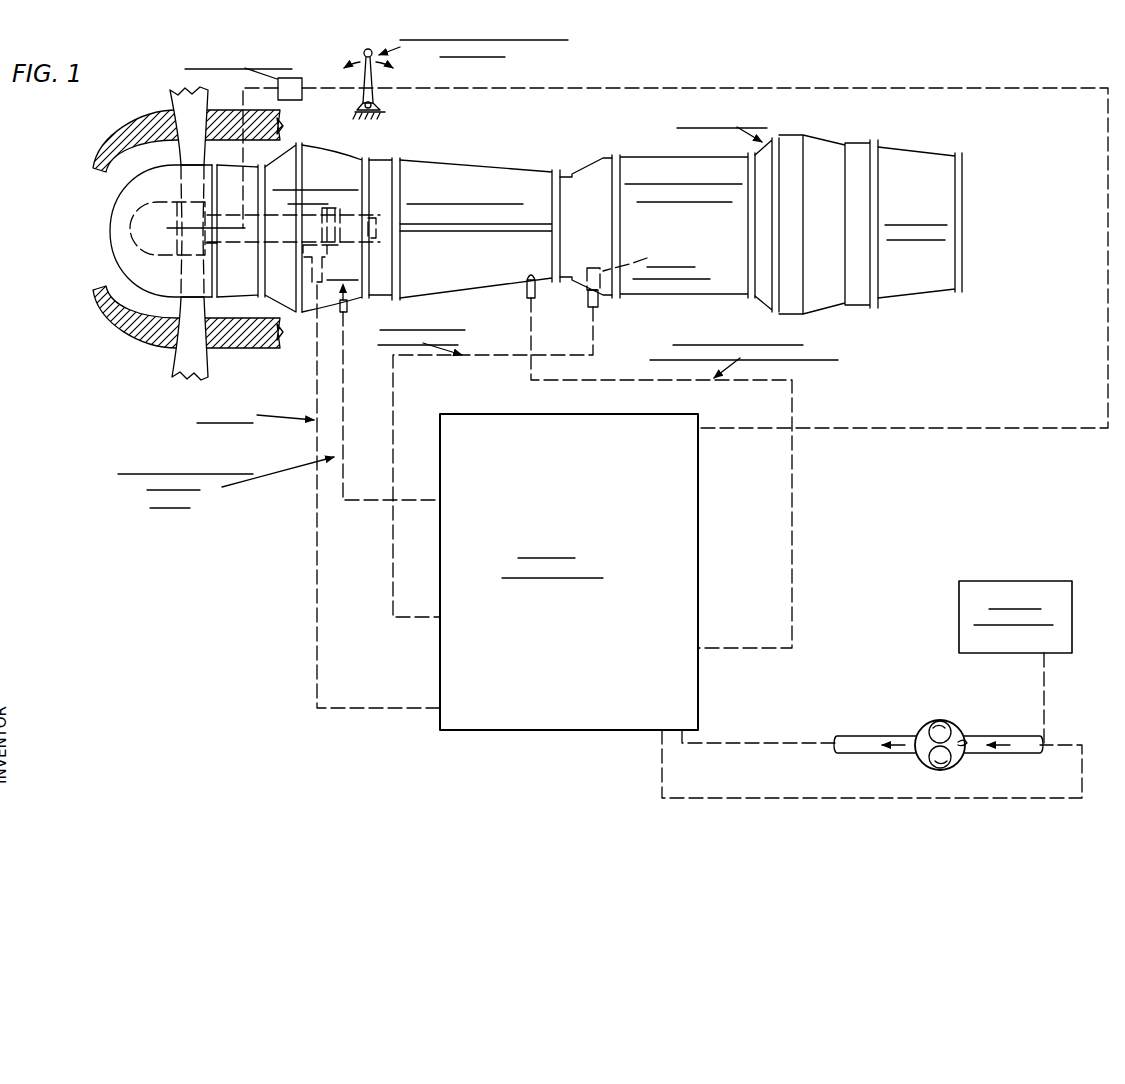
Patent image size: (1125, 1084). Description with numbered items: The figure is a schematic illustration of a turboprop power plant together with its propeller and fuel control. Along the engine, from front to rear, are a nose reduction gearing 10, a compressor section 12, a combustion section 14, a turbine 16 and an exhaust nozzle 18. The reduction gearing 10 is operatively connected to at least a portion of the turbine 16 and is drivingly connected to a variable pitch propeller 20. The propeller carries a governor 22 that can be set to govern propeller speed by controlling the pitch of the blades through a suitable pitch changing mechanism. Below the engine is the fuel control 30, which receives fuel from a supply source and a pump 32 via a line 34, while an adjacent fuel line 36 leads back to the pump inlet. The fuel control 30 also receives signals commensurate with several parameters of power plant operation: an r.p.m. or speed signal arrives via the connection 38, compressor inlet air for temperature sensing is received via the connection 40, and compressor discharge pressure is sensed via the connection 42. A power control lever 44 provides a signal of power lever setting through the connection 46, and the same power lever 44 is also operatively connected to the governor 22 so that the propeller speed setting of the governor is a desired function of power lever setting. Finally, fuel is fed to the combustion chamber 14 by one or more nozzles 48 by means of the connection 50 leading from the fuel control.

The nose reduction gearing 10 is at (330, 150).
The compressor section 12 is at (463, 160).
The combustion section 14 is at (630, 152).
The turbine 16 is at (791, 136).
The exhaust nozzle 18 is at (928, 153).
The variable pitch propeller 20 is at (132, 199).
The governor 22 is at (303, 76).
The fuel control 30 is at (522, 708).
The pump 32 is at (957, 726).
The line 34 is at (762, 743).
The fuel line 36 is at (662, 775).
The connection 38 is at (317, 565).
The connection 40 is at (345, 449).
The connection 42 is at (792, 556).
The power control lever 44 is at (372, 79).
The connection 46 is at (838, 427).
The nozzles 48 is at (593, 267).
The connection 50 is at (394, 397).